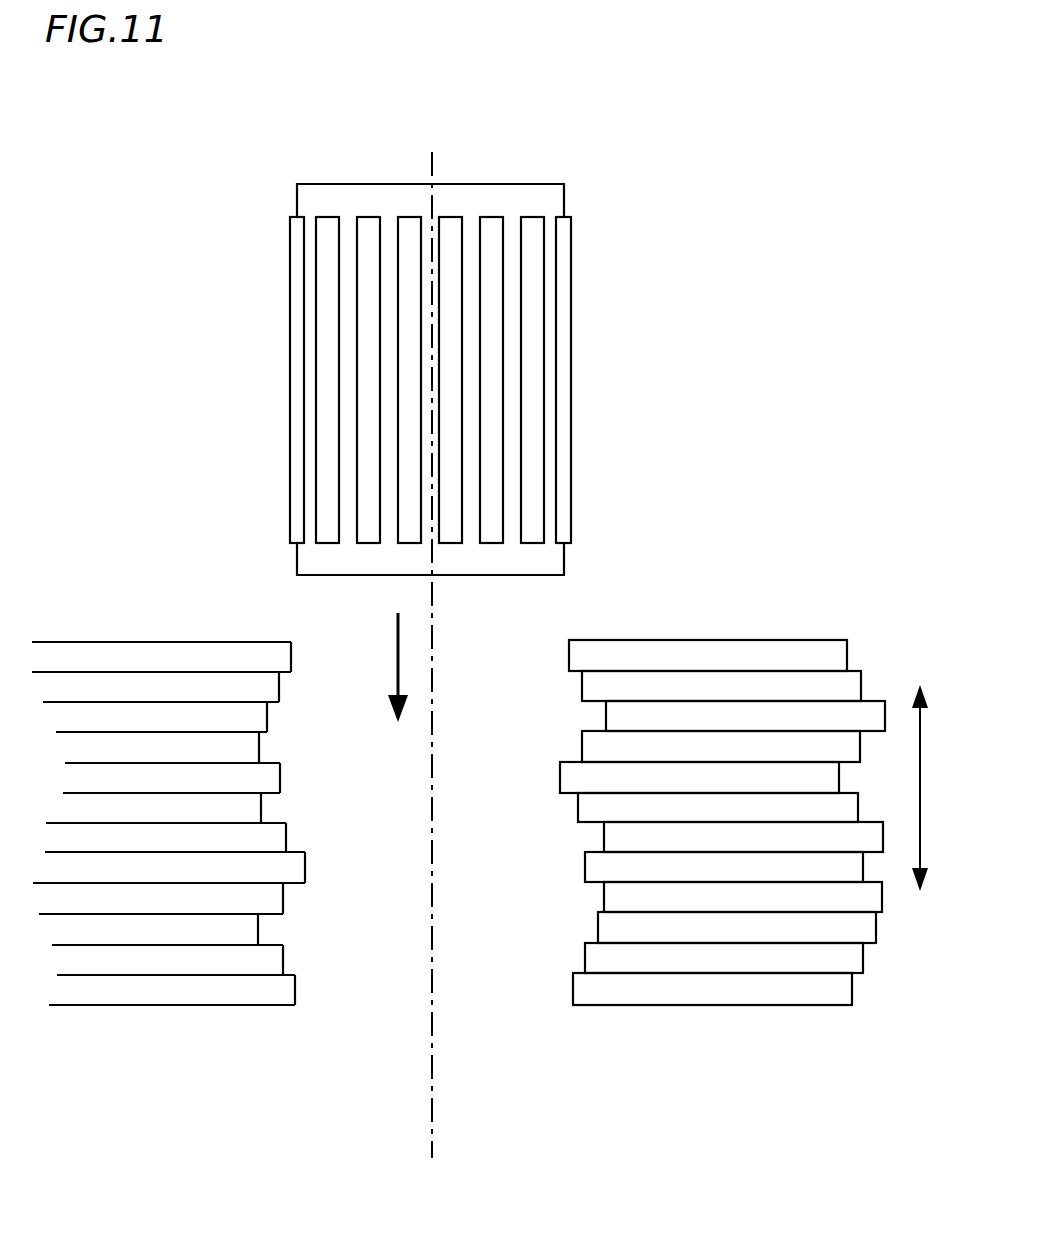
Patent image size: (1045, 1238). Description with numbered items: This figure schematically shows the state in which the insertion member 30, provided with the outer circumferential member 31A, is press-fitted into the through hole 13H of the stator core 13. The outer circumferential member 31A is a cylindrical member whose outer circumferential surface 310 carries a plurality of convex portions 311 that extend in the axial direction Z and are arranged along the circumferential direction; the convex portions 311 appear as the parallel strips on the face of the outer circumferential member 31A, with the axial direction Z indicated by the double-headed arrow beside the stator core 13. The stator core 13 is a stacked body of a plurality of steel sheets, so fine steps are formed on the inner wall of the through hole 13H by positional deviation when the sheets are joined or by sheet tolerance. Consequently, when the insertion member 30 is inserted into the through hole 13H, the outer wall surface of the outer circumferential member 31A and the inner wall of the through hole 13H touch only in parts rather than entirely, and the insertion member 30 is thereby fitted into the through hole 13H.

The insertion member 30 is at (424, 325).
The outer circumferential member 31A is at (366, 196).
The outer circumferential surface 310 is at (296, 210).
The convex portions 311 is at (330, 477).
The stator core 13 is at (134, 634).
The through hole 13H is at (517, 680).
The axial direction Z is at (929, 788).